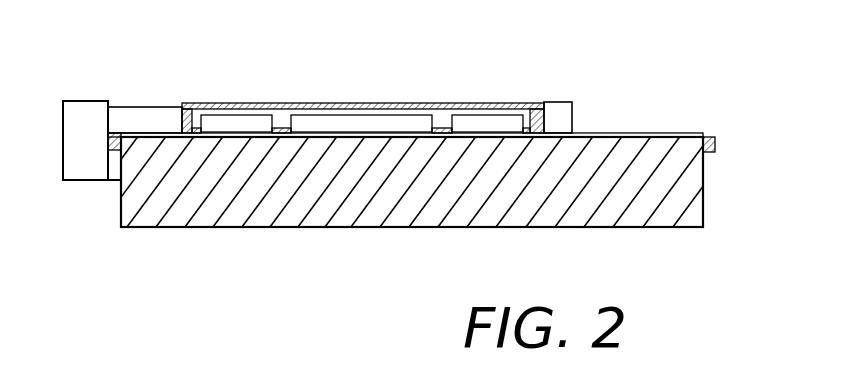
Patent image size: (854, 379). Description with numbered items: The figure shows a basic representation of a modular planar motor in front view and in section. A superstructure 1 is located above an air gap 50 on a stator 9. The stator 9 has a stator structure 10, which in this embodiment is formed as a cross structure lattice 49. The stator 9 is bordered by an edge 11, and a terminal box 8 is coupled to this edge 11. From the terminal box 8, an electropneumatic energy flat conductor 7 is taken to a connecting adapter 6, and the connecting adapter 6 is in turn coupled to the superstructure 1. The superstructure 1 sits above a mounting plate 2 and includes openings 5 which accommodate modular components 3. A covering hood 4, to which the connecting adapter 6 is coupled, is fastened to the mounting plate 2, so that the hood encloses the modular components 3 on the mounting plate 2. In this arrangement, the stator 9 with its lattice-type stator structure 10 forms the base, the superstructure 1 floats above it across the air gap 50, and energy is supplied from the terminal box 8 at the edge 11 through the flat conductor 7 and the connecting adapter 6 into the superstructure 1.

The superstructure 1 is at (448, 77).
The mounting plate 2 is at (545, 133).
The modular components 3 is at (462, 120).
The covering hood 4 is at (186, 102).
The openings 5 is at (441, 134).
The connecting adapter 6 is at (563, 110).
The electropneumatic energy flat conductor 7 is at (131, 106).
The terminal box 8 is at (80, 117).
The stator 9 is at (680, 228).
The stator structure 10 is at (120, 172).
The edge 11 is at (718, 150).
The cross structure lattice 49 is at (170, 140).
The air gap 50 is at (238, 140).